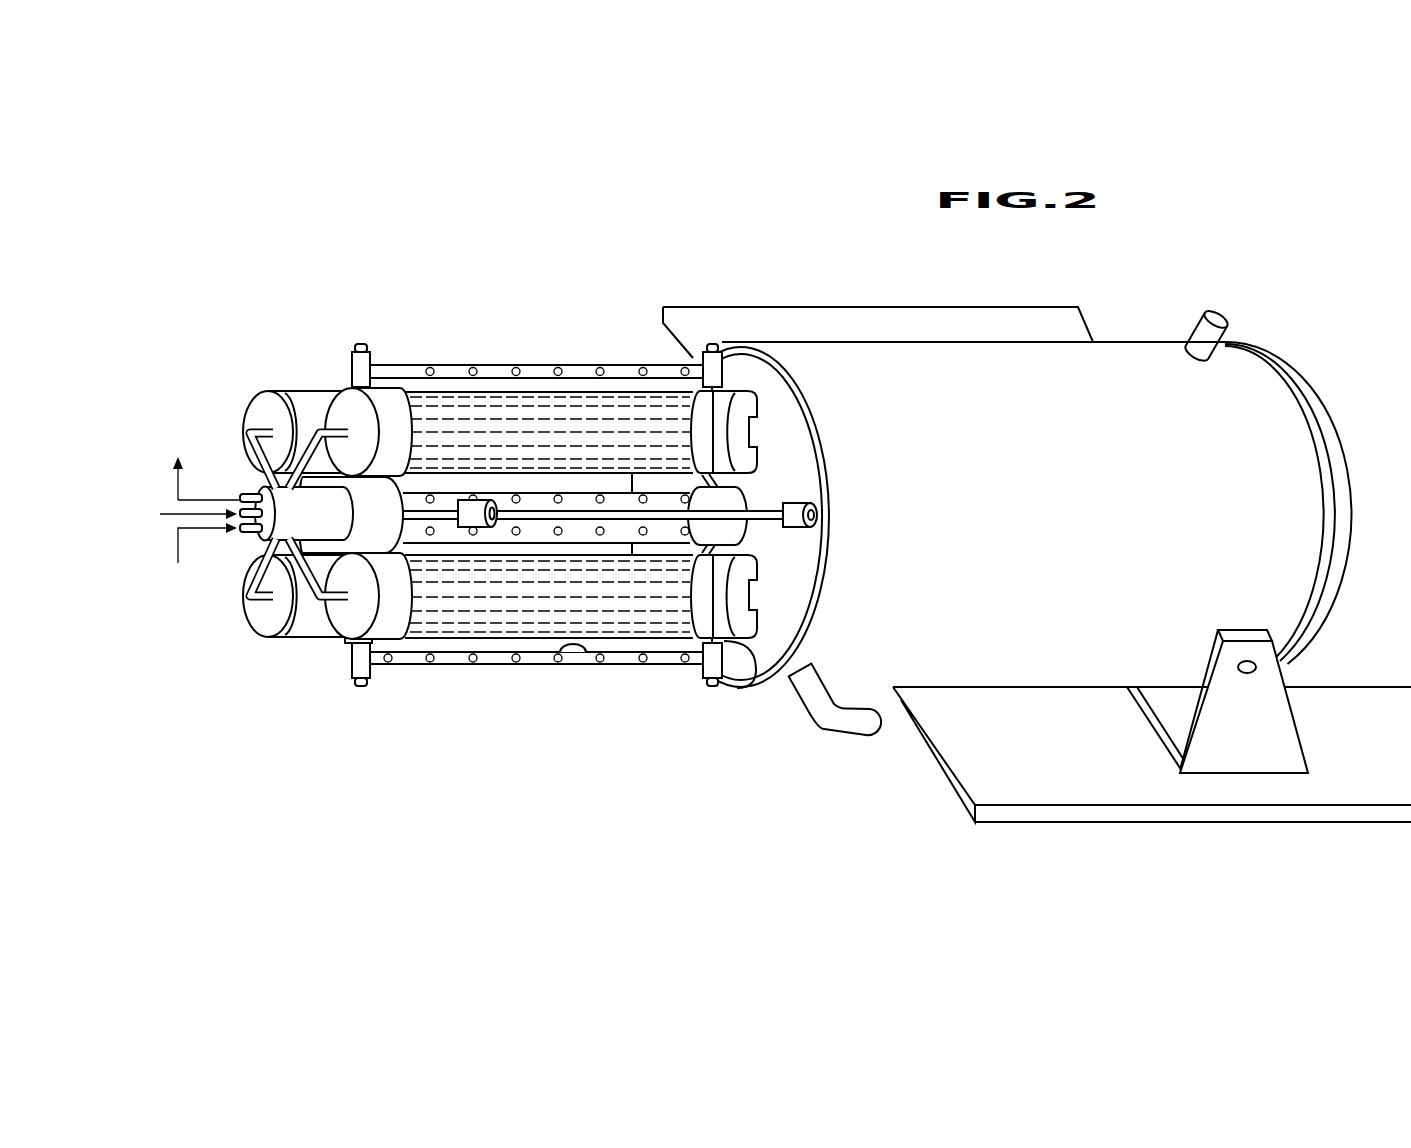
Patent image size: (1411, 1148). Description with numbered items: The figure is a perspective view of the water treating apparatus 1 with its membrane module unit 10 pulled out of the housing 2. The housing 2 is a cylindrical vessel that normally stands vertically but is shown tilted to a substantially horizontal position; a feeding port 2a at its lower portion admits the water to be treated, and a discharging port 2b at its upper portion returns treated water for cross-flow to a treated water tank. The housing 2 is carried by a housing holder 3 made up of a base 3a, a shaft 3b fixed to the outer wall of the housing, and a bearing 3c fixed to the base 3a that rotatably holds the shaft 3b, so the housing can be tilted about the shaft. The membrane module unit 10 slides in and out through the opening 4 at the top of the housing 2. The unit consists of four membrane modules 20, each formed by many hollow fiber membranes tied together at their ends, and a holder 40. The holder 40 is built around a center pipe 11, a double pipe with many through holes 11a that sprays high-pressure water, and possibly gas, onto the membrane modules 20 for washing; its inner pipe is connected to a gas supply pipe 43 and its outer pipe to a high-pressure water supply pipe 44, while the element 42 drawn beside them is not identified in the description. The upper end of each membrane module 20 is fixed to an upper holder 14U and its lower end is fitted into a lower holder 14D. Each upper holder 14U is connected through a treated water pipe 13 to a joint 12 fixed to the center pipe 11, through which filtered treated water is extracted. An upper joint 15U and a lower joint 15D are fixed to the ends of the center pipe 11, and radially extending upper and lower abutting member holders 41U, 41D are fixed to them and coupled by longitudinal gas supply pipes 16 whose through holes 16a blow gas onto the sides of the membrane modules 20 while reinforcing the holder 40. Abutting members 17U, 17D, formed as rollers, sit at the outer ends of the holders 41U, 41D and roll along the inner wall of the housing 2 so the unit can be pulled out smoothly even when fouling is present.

The water treating apparatus 1 is at (867, 278).
The housing 2 is at (958, 362).
The feeding port 2a is at (1217, 315).
The discharging port 2b is at (855, 729).
The housing holder 3 is at (1152, 677).
The base 3a is at (1049, 760).
The shaft 3b is at (1247, 660).
The bearing 3c is at (1283, 718).
The opening 4 is at (745, 372).
The membrane module unit 10 is at (490, 338).
The center pipe 11 is at (546, 539).
The through holes 11a is at (600, 540).
The joint 12 is at (277, 503).
The treated water pipe 13 is at (317, 443).
The upper holder 14U is at (268, 403).
The lower holder 14D is at (742, 425).
The upper joint 15U is at (257, 593).
The lower joint 15D is at (733, 532).
The gas supply pipe 16 is at (537, 517).
The through holes 16a is at (588, 652).
The upper abutting member 17U is at (362, 343).
The lower abutting member 17D is at (710, 345).
The membrane module 20 is at (324, 385).
The holder 40 is at (459, 347).
The upper abutting member holder 41U is at (350, 640).
The lower abutting member holder 41D is at (727, 642).
The treated water port 42 is at (244, 497).
The gas supply pipe 43 is at (234, 530).
The high-pressure water supply pipe 44 is at (252, 538).